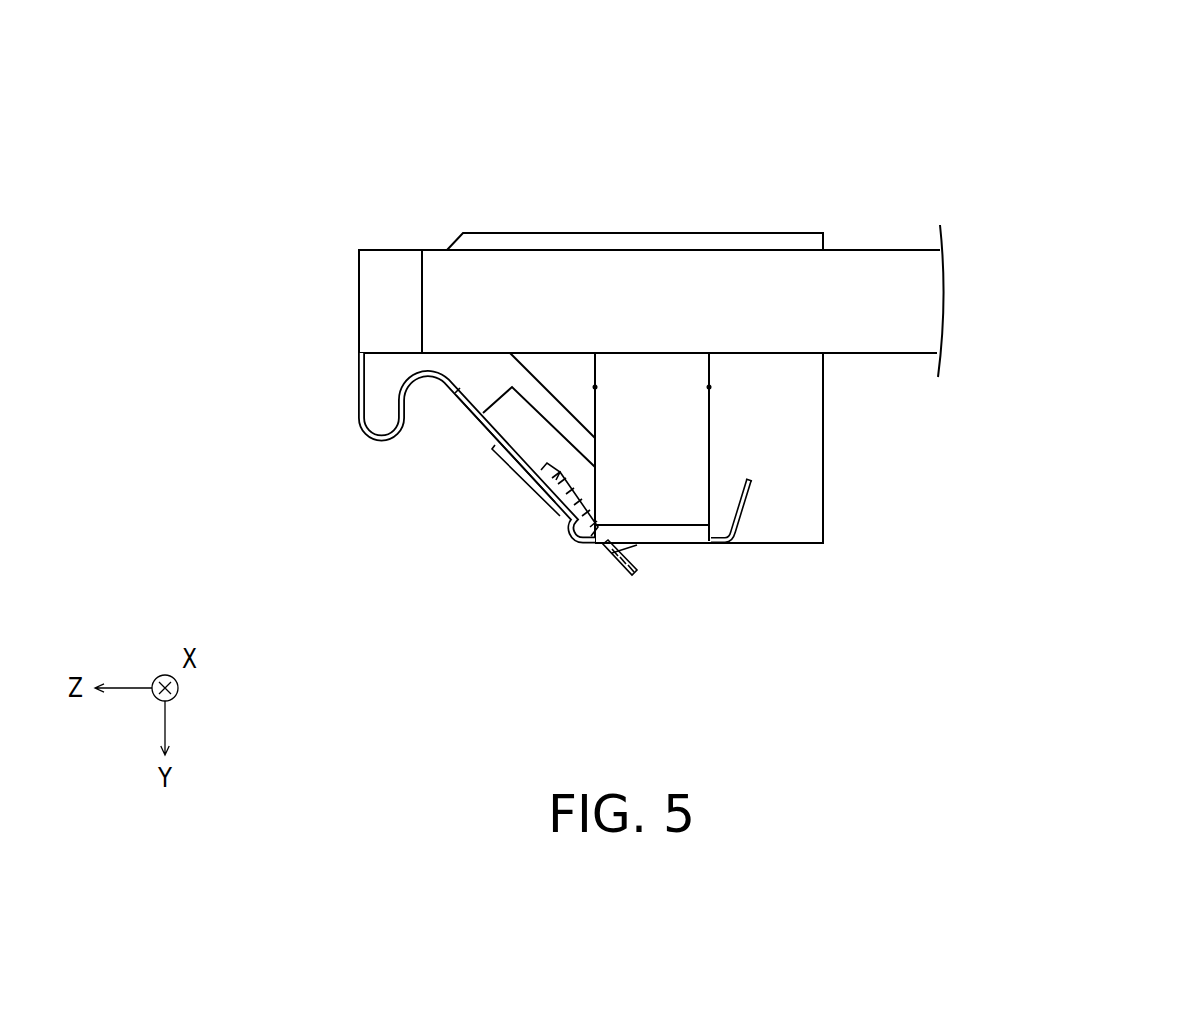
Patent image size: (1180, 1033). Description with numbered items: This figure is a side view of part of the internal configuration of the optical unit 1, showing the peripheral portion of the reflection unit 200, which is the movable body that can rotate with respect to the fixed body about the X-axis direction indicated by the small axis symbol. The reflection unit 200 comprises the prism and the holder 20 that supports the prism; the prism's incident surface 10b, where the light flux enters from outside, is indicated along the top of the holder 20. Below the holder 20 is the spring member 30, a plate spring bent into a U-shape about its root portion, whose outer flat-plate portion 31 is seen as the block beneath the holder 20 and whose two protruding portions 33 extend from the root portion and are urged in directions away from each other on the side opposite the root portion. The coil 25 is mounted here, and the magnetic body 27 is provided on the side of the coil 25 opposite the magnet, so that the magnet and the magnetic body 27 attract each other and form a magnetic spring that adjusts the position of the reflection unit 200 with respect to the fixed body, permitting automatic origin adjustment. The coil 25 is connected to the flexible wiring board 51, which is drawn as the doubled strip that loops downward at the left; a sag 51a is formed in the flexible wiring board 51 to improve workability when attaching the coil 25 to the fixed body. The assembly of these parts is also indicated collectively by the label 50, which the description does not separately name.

The optical unit 1 is at (731, 380).
The reflection unit 200 is at (651, 222).
The holder 20 is at (762, 242).
The incident surface 10b is at (665, 231).
The spring member 30 is at (697, 528).
The outer flat-plate portion 31 is at (630, 448).
The contact 50 is at (565, 523).
The flexible wiring board 51 is at (443, 435).
The sag 51a is at (380, 450).
The coil 25 is at (503, 415).
The magnetic body 27 is at (518, 467).
The protruding portion 33 is at (543, 467).